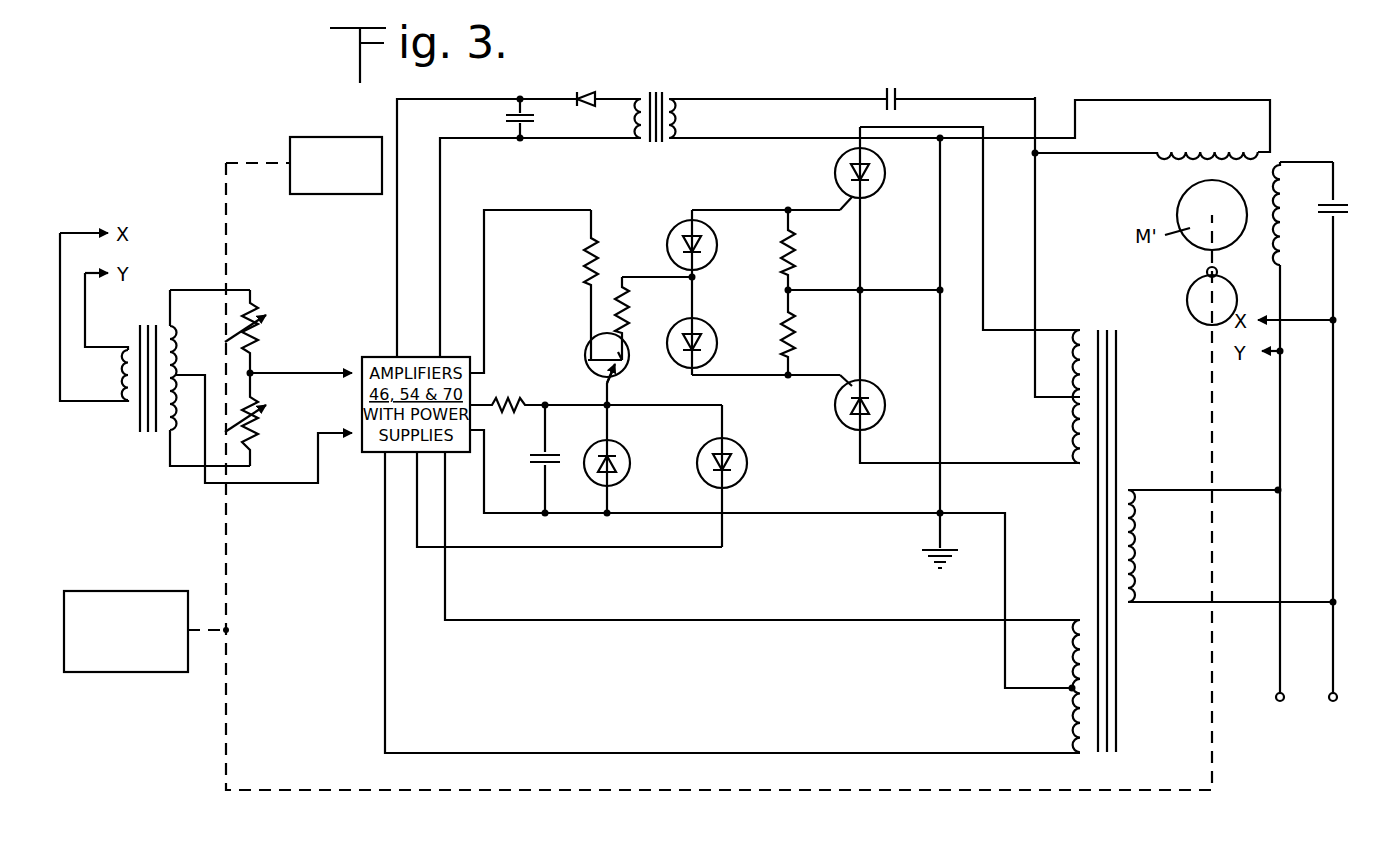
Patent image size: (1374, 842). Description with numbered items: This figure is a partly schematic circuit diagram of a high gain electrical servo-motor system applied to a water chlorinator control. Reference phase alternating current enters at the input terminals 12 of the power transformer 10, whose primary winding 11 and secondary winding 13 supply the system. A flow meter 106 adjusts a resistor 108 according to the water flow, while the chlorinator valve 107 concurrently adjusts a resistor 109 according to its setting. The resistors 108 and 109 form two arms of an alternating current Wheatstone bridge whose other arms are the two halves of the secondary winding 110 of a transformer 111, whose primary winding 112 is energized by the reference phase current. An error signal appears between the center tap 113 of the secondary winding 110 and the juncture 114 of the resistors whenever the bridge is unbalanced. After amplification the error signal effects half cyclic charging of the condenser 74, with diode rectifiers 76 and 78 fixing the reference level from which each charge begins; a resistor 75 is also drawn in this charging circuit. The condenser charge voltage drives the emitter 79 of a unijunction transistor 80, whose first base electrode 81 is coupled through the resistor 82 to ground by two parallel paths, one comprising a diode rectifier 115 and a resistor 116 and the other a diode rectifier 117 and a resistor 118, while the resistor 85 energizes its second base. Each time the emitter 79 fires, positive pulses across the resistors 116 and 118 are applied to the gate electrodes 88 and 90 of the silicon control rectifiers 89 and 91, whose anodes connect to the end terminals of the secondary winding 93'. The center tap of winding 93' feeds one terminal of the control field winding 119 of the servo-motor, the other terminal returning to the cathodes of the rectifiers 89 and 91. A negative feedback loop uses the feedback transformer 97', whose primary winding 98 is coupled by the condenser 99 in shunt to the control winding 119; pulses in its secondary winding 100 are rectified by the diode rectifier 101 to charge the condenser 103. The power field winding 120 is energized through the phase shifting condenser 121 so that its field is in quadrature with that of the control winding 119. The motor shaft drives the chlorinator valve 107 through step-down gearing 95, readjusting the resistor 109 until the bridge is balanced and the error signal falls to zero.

The power transformer 10 is at (1122, 612).
The primary winding 11 is at (1140, 535).
The input terminals 12 is at (1284, 701).
The secondary winding 13 is at (1068, 715).
The condenser 74 is at (528, 458).
The resistor 75 is at (510, 398).
The diode rectifier 76 is at (748, 462).
The diode rectifier 78 is at (628, 460).
The emitter electrode 79 is at (612, 374).
The unijunction transistor 80 is at (625, 340).
The first base electrode 81 is at (628, 348).
The resistor 82 is at (628, 296).
The resistor 85 is at (583, 262).
The gate electrode 88 is at (845, 202).
The silicon control rectifier 89 is at (882, 178).
The gate electrode 90 is at (845, 396).
The silicon control rectifier 91 is at (886, 404).
The transformer secondary winding 93' is at (1050, 396).
The step-down gearing 95 is at (1190, 298).
The feedback transformer 97' is at (672, 132).
The primary winding 98 is at (678, 118).
The condenser 99 is at (891, 86).
The secondary winding 100 is at (636, 118).
The diode rectifier 101 is at (586, 93).
The condenser 103 is at (536, 118).
The flow meter 106 is at (318, 195).
The chlorinator valve 107 is at (100, 673).
The resistor 108 is at (262, 340).
The resistor 109 is at (258, 438).
The secondary winding 110 is at (178, 335).
The transformer 111 is at (160, 302).
The primary winding 112 is at (122, 375).
The center tap 113 is at (180, 372).
The juncture 114 is at (255, 372).
The diode rectifier 115 is at (718, 246).
The resistor 116 is at (797, 252).
The diode rectifier 117 is at (718, 344).
The resistor 118 is at (797, 334).
The control field winding 119 is at (1215, 146).
The power field winding 120 is at (1285, 235).
The phase shifting condenser 121 is at (1350, 205).